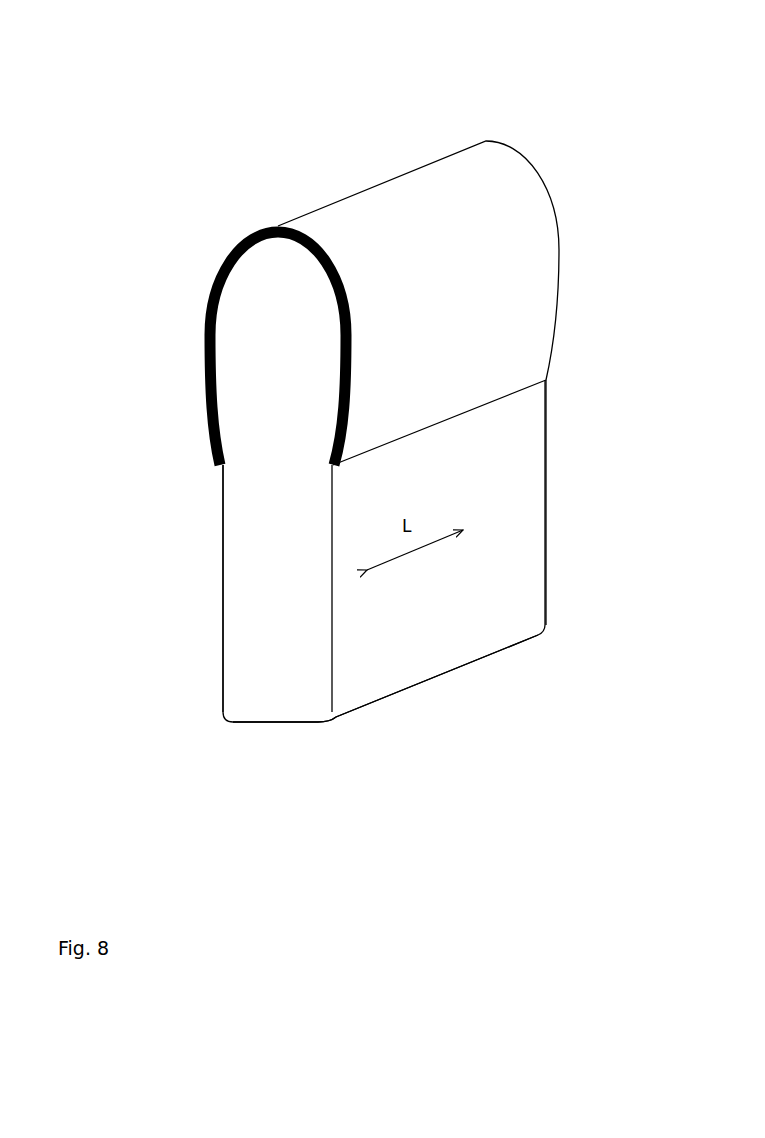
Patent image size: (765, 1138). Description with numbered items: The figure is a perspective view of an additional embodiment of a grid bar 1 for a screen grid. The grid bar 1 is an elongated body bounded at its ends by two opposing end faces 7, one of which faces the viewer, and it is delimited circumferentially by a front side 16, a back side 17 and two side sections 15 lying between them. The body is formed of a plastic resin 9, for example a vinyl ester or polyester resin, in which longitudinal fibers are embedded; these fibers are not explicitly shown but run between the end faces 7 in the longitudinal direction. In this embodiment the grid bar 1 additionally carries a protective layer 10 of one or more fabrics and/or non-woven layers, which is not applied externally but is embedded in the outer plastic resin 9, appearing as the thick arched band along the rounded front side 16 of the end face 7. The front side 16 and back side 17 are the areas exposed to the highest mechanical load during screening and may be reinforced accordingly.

The grid bar 1 is at (118, 268).
The end face 7 is at (283, 683).
The plastic resin 9 is at (533, 298).
The protective layer 10 is at (226, 262).
The side section 15 is at (213, 553).
The front side 16 is at (369, 122).
The back side 17 is at (383, 738).